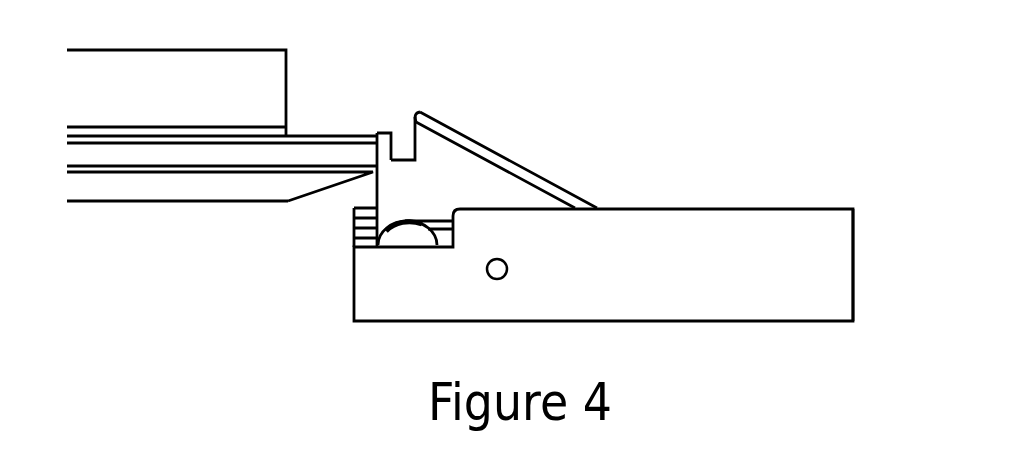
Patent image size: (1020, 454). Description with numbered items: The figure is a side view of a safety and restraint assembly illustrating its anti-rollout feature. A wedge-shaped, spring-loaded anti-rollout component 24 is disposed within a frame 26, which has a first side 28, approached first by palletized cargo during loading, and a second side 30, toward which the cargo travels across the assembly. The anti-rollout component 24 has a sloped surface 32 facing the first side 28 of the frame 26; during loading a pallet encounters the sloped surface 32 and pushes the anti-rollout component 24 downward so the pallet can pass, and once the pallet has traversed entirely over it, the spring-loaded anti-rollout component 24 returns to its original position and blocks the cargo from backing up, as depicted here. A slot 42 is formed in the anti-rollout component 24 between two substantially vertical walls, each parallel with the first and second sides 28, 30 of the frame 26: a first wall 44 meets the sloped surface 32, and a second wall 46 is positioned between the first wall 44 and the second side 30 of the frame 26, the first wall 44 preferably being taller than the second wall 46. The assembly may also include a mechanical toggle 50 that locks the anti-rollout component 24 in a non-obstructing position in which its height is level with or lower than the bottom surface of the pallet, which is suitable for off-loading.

The anti-rollout component 24 is at (358, 128).
The frame 26 is at (713, 298).
The first side 28 is at (855, 262).
The second side 30 is at (354, 272).
The sloped surface 32 is at (511, 130).
The slot 42 is at (401, 95).
The first wall 44 is at (415, 113).
The second wall 46 is at (394, 137).
The mechanical toggle 50 is at (410, 234).